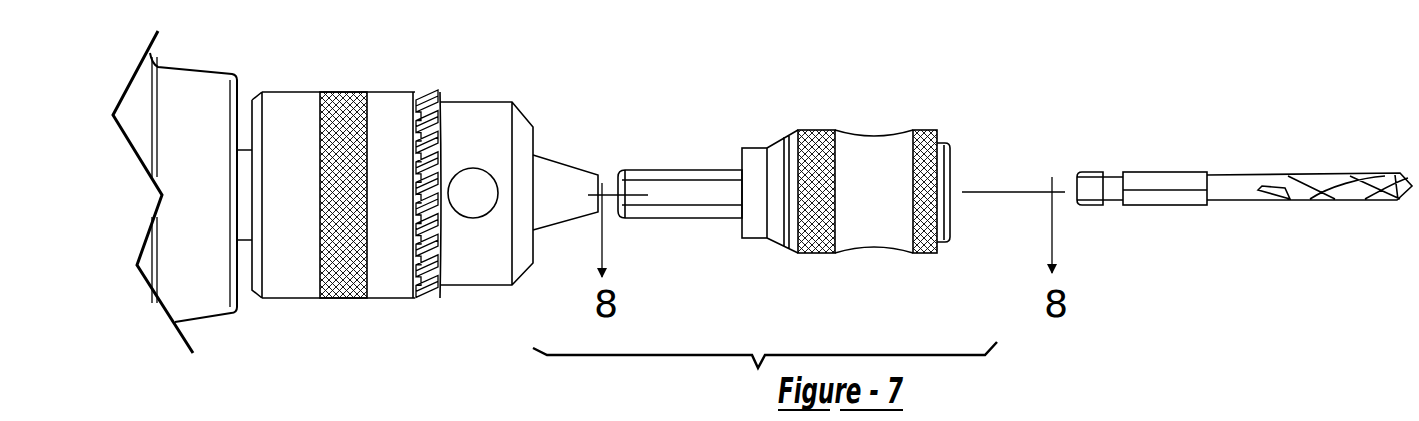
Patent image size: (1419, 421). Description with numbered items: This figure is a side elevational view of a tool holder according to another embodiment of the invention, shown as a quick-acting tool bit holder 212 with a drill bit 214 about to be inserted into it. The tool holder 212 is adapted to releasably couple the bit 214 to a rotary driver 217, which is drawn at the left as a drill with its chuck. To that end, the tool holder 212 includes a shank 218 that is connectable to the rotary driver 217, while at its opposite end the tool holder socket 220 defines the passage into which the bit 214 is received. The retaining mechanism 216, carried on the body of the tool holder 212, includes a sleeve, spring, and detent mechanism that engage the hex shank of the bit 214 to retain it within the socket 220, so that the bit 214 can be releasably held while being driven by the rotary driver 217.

The quick-acting tool bit holder 212 is at (849, 188).
The bit 214 is at (1228, 175).
The retaining mechanism 216 is at (882, 253).
The rotary driver 217 is at (470, 120).
The shank 218 is at (672, 193).
The tool holder socket 220 is at (745, 232).